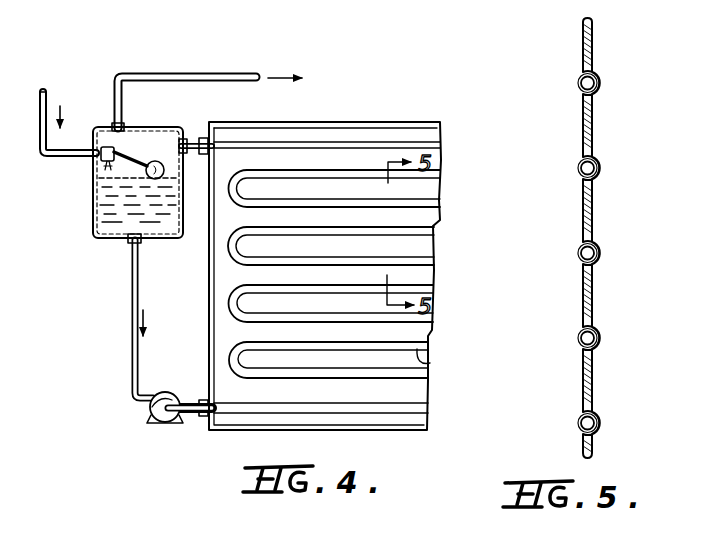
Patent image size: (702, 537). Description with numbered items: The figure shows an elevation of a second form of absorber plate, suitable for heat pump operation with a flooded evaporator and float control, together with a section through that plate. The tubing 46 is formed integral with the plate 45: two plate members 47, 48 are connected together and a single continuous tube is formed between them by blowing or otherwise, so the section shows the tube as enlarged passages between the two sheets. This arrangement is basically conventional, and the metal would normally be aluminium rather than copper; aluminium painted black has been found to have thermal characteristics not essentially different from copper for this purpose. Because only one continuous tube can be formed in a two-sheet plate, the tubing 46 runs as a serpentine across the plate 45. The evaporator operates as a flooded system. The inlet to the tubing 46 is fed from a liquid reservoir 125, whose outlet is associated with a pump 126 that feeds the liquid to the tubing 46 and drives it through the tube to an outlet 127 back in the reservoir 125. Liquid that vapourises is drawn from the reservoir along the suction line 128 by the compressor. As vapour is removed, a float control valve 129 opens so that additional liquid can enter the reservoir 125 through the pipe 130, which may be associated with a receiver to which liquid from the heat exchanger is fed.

In FIG. 4, the plate 45 is at (447, 215).
In FIG. 5, the plate 45 is at (605, 117).
In FIG. 4, the tubing 46 is at (431, 360).
In FIG. 5, the tubing 46 is at (592, 167).
In FIG. 5, the plate member 47 is at (595, 247).
In FIG. 5, the plate member 48 is at (582, 261).
In FIG. 4, the liquid reservoir 125 is at (96, 224).
In FIG. 4, the pump 126 is at (165, 421).
In FIG. 4, the outlet 127 is at (194, 137).
In FIG. 4, the suction line 128 is at (188, 75).
In FIG. 4, the float control valve 129 is at (144, 162).
In FIG. 4, the pipe 130 is at (60, 86).